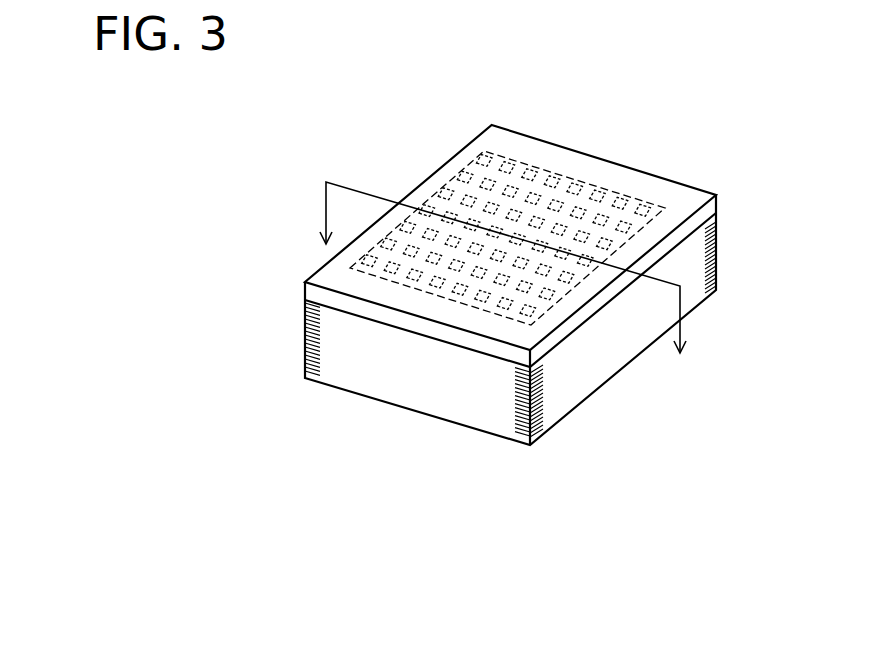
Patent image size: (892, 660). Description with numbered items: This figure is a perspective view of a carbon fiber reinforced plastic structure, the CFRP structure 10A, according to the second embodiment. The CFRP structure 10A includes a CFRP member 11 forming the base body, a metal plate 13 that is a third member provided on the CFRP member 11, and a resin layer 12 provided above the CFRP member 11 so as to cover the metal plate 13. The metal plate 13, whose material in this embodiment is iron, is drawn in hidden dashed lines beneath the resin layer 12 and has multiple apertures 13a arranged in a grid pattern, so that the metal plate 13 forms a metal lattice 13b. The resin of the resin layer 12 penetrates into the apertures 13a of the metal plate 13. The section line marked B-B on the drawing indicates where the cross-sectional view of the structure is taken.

The CFRP structure 10A is at (511, 244).
The CFRP member 11 is at (580, 390).
The resin layer 12 is at (652, 192).
The metal plate 13 is at (507, 197).
The apertures 13a is at (468, 166).
The metal lattice 13b is at (505, 156).